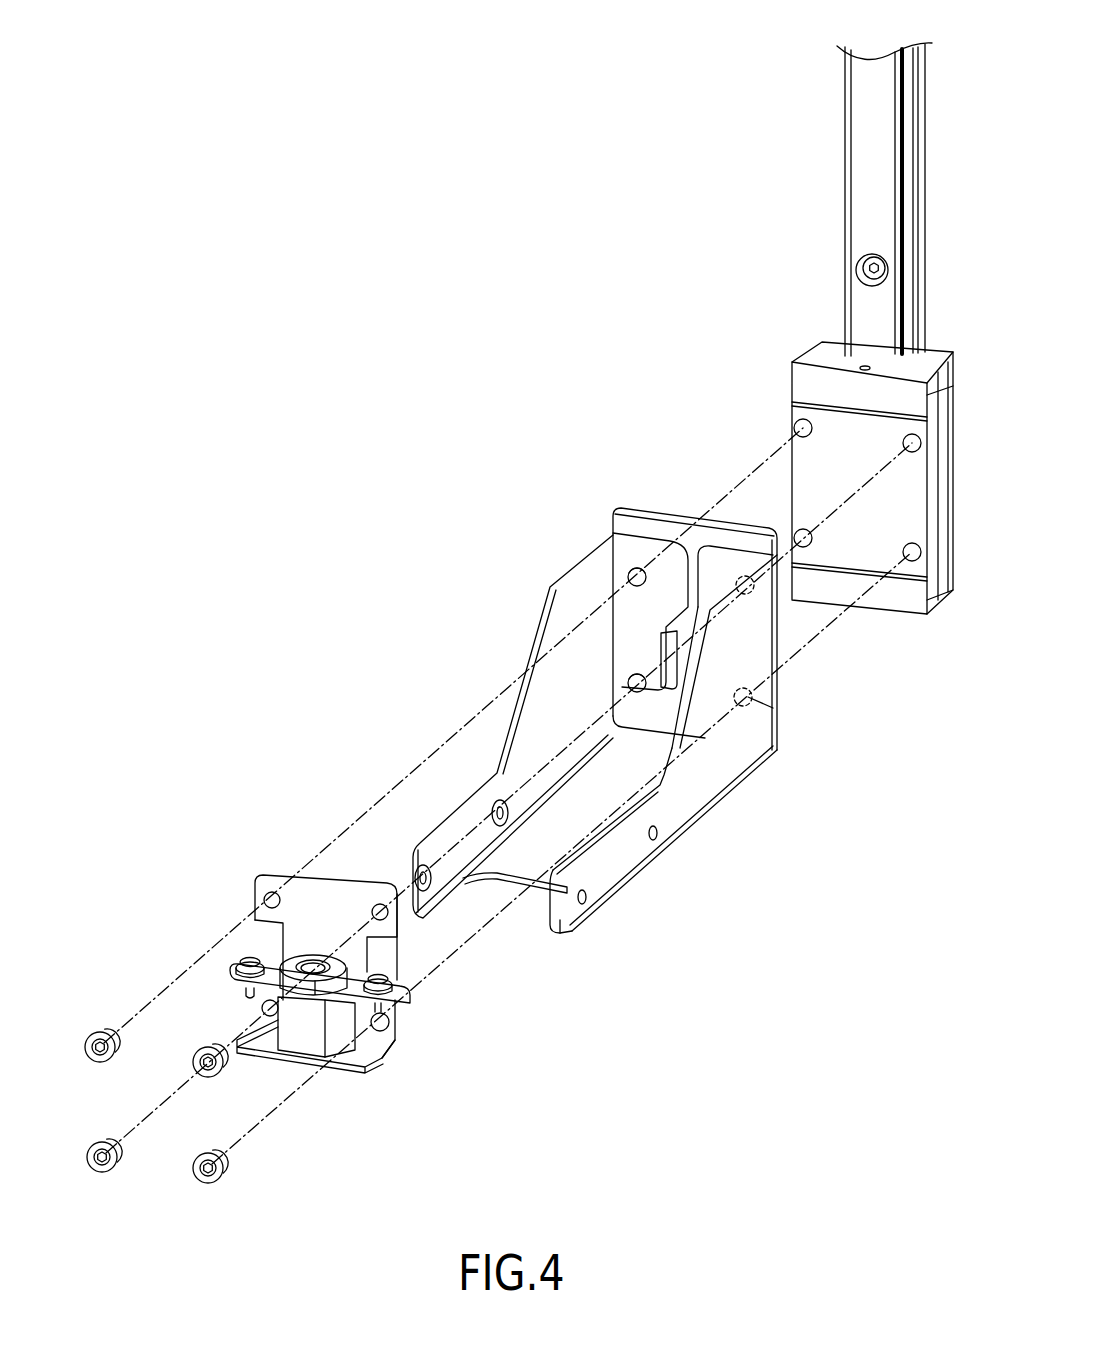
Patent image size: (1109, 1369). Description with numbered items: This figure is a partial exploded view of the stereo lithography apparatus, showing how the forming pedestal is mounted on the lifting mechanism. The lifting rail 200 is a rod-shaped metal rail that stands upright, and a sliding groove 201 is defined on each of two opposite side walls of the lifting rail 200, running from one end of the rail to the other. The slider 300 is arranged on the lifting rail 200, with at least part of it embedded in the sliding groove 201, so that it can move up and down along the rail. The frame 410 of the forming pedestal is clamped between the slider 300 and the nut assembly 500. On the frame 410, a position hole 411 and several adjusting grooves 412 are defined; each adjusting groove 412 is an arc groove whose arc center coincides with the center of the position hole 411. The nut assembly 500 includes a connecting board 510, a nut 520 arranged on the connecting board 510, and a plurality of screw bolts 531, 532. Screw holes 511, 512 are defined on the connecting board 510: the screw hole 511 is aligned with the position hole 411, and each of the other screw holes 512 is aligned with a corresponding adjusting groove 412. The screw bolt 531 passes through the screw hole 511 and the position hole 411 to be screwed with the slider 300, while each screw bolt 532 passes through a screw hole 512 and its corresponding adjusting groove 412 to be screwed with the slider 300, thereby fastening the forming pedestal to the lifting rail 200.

The lifting rail 200 is at (862, 199).
The sliding groove 201 is at (900, 155).
The slider 300 is at (798, 388).
The frame 410 is at (603, 706).
The position hole 411 is at (745, 578).
The adjusting groove 412 is at (634, 570).
The nut assembly 500 is at (282, 1022).
The connecting board 510 is at (328, 921).
The screw hole 511 is at (383, 904).
The screw hole 512 is at (265, 897).
The nut 520 is at (302, 1028).
The screw bolt 531 is at (195, 1065).
The screw bolt 532 is at (92, 1030).